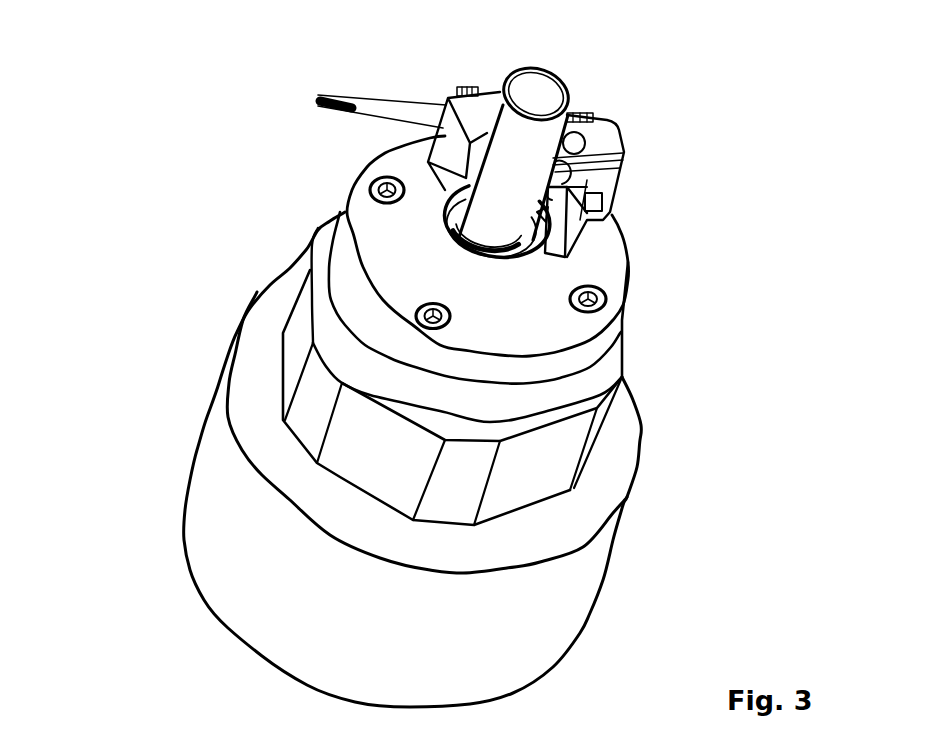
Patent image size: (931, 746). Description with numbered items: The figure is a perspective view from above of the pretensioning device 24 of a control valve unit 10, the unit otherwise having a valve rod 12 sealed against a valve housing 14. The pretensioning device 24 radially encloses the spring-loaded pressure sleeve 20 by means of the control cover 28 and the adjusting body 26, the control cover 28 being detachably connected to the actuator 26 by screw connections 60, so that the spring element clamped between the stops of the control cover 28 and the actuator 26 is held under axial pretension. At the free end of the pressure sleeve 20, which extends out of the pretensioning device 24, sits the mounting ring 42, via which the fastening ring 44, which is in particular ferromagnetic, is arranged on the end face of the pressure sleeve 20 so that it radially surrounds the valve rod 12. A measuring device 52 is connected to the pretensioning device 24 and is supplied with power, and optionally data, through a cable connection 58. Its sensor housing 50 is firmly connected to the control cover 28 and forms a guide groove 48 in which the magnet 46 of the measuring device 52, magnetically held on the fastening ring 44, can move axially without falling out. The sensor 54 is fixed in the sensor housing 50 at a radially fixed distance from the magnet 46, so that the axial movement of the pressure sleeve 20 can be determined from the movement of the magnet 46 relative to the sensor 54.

The control valve unit 10 is at (50, 24).
The valve rod 12 is at (545, 68).
The valve housing 14 is at (240, 492).
The pressure sleeve 20 is at (450, 272).
The pretensioning device 24 is at (630, 321).
The adjusting body 26 is at (548, 450).
The control cover 28 is at (600, 262).
The mounting ring 42 is at (432, 230).
The fastening ring 44 is at (575, 268).
The magnet 46 is at (548, 236).
The guide groove 48 is at (562, 177).
The sensor housing 50 is at (607, 128).
The measuring device 52 is at (597, 96).
The sensor 54 is at (600, 196).
The cable connection 58 is at (406, 110).
The screw connections 60 is at (413, 318).